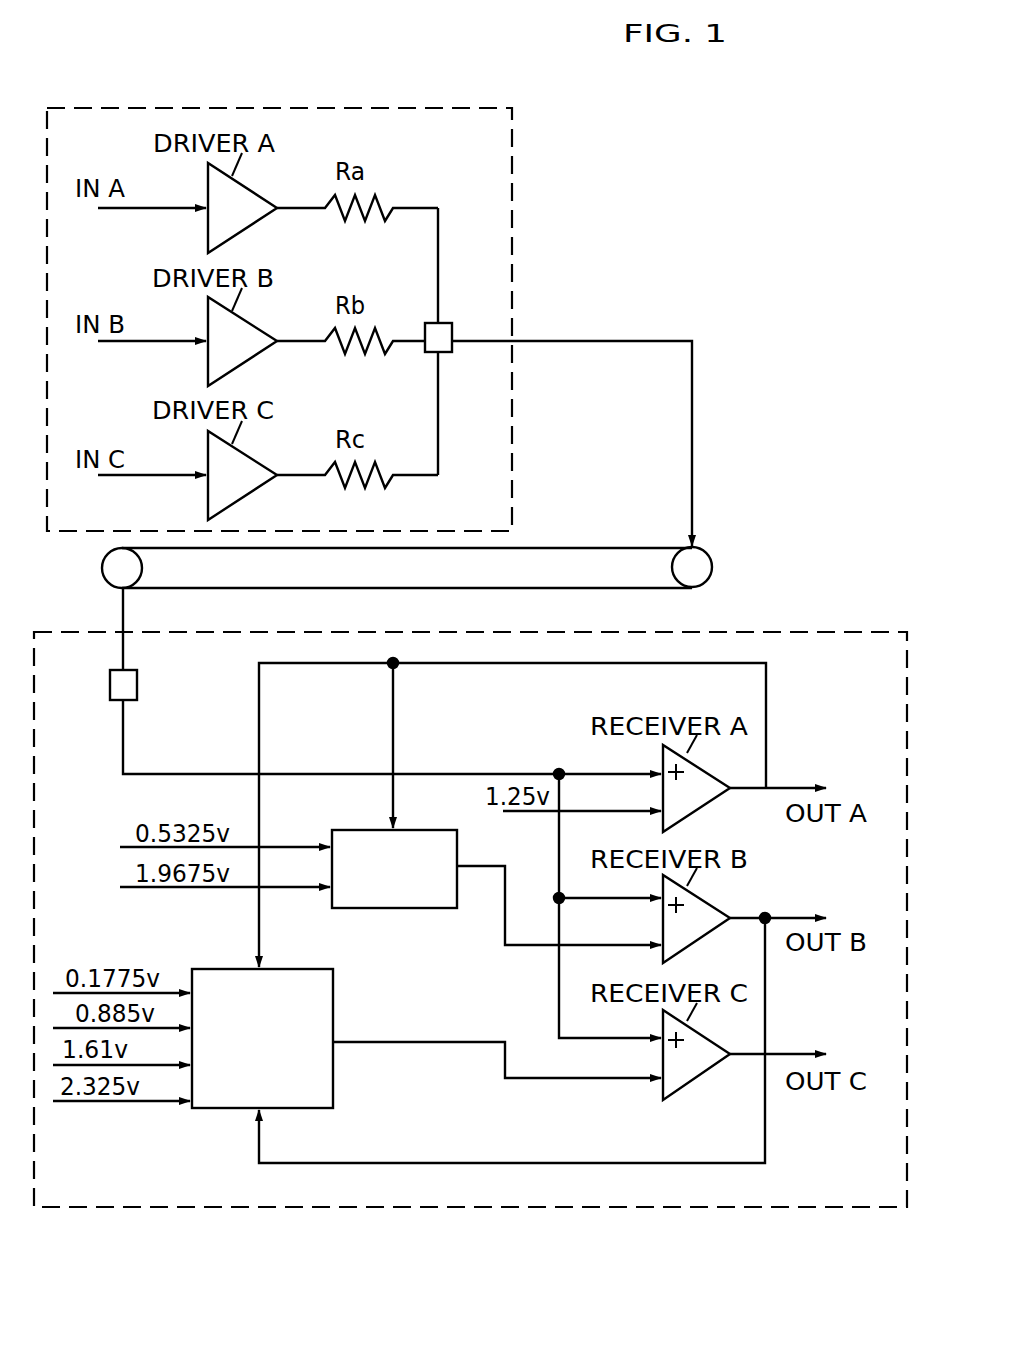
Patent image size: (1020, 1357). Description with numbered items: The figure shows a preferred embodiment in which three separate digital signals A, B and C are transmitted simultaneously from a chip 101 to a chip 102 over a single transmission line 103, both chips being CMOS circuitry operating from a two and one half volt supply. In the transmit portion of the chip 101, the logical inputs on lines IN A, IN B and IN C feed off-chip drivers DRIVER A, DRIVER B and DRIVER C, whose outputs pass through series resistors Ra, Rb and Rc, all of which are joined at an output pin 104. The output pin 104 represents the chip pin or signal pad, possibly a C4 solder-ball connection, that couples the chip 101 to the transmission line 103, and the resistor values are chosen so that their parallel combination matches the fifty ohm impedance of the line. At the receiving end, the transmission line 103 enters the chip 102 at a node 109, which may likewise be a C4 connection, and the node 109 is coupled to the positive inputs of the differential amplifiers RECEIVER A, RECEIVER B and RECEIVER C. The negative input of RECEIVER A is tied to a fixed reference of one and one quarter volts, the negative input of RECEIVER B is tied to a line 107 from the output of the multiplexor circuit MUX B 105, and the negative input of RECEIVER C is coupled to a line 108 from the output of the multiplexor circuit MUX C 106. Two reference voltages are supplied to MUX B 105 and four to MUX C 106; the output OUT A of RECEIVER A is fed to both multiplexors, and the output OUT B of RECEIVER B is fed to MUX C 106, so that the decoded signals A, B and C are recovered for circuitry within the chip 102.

The chip 101 is at (516, 178).
The chip 102 is at (853, 617).
The transmission line 103 is at (555, 545).
The output pin 104 is at (452, 330).
The multiplexor circuit MUX B 105 is at (413, 910).
The multiplexor circuit MUX C 106 is at (333, 1087).
The line 107 is at (542, 948).
The line 108 is at (425, 1040).
The node 109 is at (138, 682).